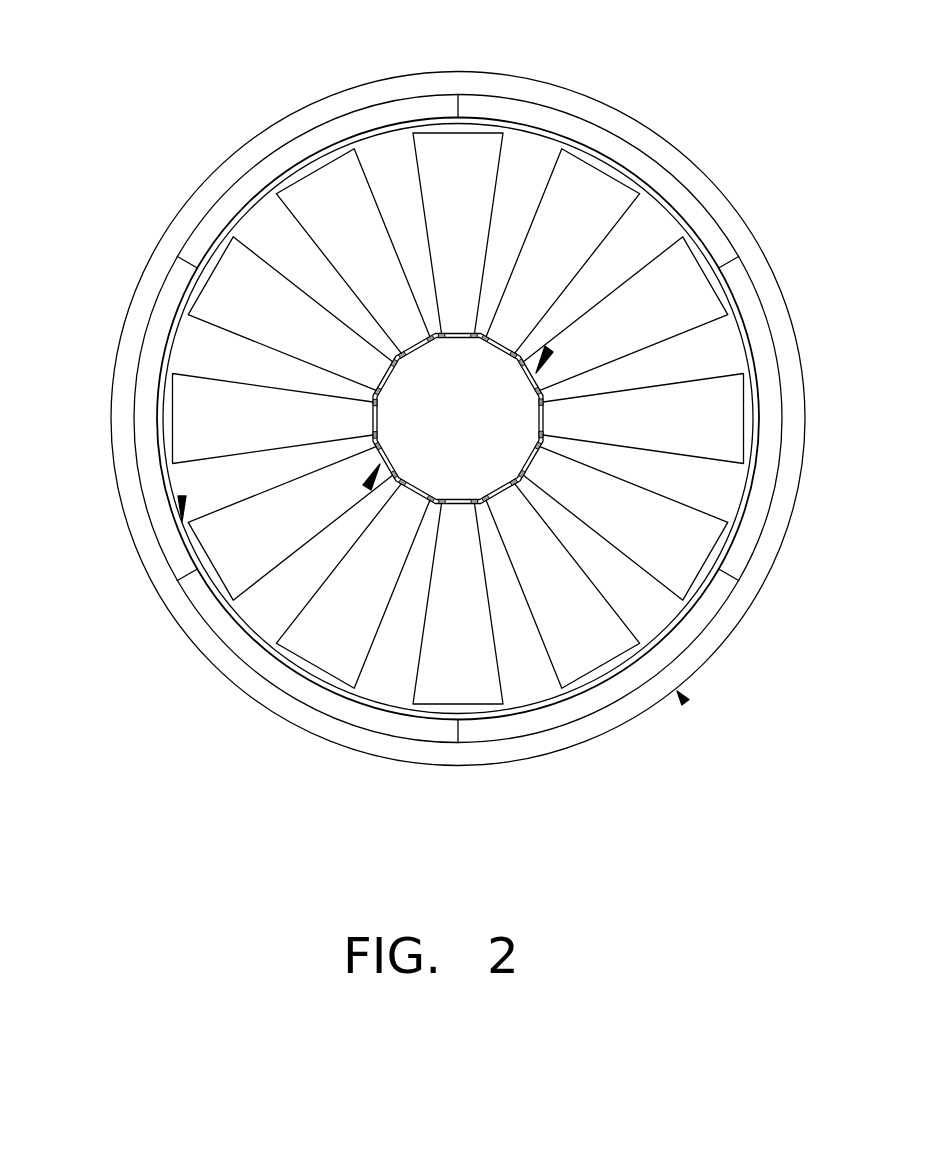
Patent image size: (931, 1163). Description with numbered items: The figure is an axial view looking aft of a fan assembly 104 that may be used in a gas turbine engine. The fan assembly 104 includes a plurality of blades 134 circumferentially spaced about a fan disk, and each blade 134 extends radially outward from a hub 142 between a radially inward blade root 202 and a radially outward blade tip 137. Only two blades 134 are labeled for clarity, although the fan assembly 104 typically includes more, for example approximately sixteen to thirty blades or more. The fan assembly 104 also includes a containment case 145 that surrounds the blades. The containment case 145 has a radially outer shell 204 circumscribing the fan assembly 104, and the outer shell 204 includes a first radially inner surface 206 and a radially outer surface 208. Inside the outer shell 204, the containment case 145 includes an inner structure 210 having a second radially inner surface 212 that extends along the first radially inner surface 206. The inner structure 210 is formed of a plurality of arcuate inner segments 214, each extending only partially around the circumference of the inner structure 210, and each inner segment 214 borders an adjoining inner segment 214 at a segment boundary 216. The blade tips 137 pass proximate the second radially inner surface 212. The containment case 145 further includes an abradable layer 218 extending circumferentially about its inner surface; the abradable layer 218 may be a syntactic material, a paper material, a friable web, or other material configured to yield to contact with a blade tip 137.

The fan assembly 104 is at (172, 55).
The blade 134 is at (297, 410).
The blade tip 137 is at (182, 497).
The hub 142 is at (484, 434).
The containment case 145 is at (685, 702).
The blade root 202 is at (366, 488).
The radially outer shell 204 is at (795, 482).
The first radially inner surface 206 is at (573, 720).
The radially outer surface 208 is at (728, 198).
The inner structure 210 is at (413, 729).
The second radially inner surface 212 is at (390, 140).
The arcuate inner segment 214 is at (295, 155).
The segment boundary 216 is at (188, 260).
The abradable layer 218 is at (748, 352).